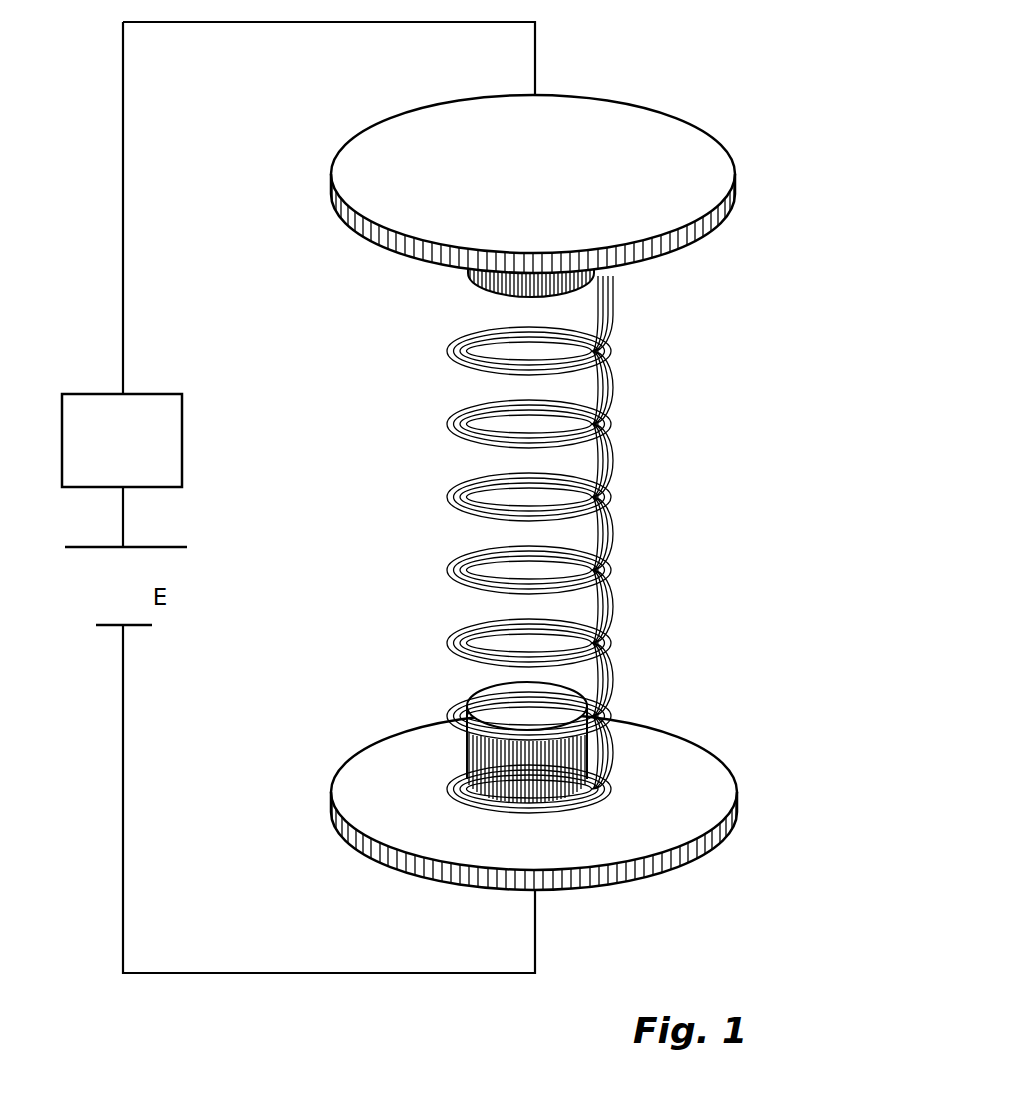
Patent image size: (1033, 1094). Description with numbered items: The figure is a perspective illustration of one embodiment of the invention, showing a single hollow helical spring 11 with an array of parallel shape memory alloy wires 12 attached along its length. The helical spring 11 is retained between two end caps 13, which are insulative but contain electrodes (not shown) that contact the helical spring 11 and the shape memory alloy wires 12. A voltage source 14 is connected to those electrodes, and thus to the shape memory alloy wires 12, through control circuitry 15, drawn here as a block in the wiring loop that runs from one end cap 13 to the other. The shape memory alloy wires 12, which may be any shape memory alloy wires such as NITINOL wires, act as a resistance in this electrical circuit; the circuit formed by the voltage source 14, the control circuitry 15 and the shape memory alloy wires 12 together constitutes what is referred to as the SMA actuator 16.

The helical spring 11 is at (577, 544).
The shape memory alloy wires 12 is at (608, 472).
The end caps 13 is at (692, 124).
The voltage source 14 is at (82, 548).
The control circuitry 15 is at (183, 442).
The SMA actuator 16 is at (612, 491).